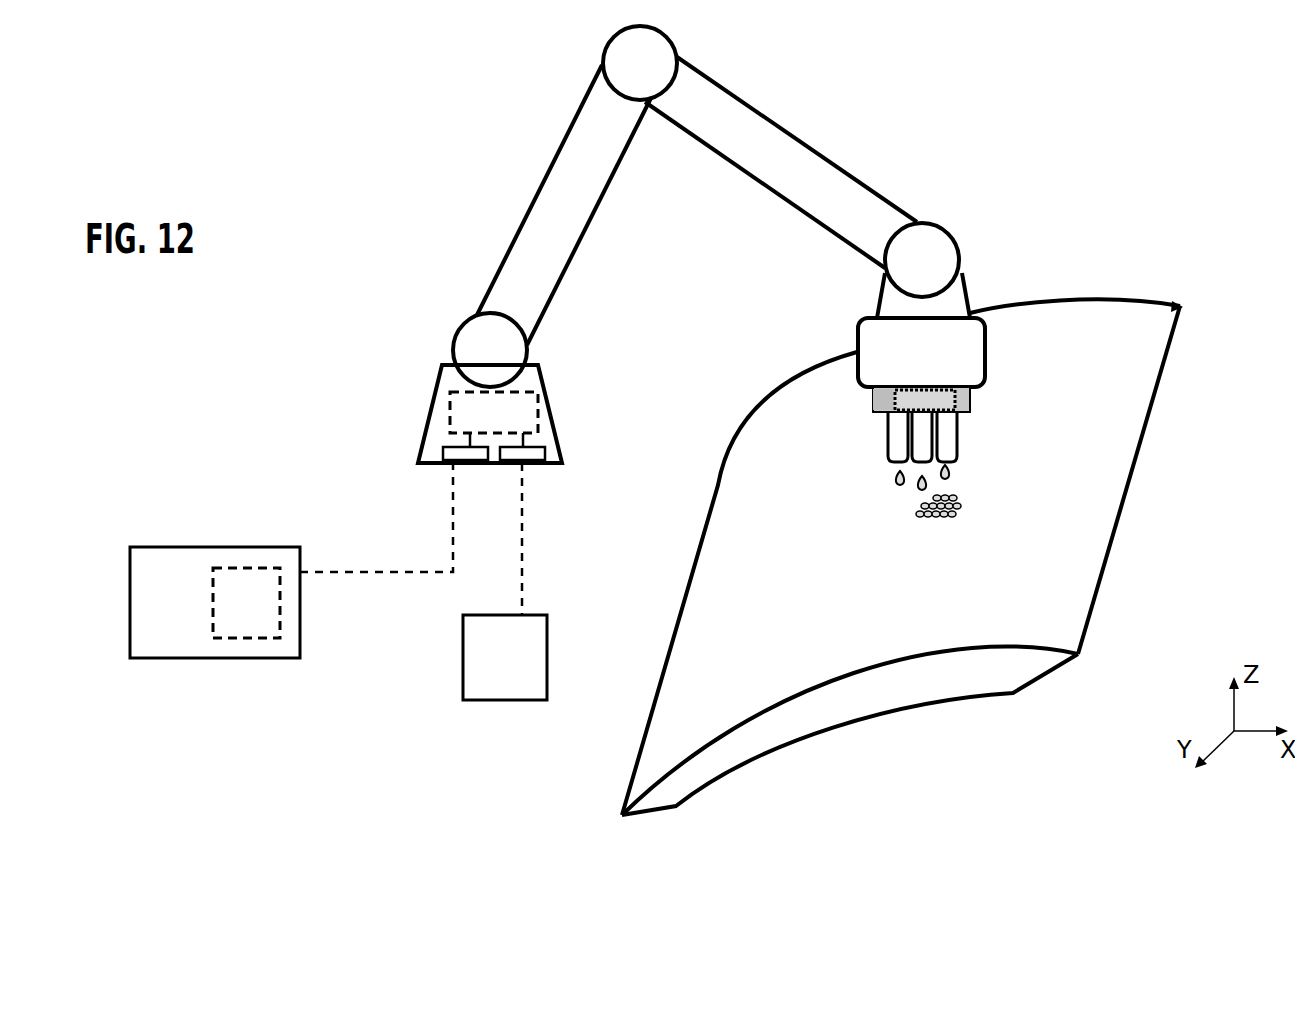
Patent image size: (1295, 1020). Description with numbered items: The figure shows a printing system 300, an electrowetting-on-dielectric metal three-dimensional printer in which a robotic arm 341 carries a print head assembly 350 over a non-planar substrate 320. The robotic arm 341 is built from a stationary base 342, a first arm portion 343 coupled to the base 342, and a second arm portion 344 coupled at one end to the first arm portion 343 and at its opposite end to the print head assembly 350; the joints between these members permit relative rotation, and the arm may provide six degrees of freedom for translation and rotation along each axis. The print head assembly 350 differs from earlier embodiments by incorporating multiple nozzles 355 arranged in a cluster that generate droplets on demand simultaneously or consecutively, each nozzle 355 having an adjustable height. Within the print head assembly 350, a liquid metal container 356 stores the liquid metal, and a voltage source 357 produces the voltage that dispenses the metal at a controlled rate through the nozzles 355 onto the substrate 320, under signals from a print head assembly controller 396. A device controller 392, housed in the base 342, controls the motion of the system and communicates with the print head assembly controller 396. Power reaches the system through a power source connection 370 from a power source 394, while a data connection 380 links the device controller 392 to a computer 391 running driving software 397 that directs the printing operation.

The printing system 300 is at (308, 180).
The substrate 320 is at (717, 628).
The robotic arm 341 is at (503, 227).
The base 342 is at (425, 417).
The first arm portion 343 is at (505, 260).
The second arm portion 344 is at (864, 190).
The print head assembly 350 is at (1008, 287).
The nozzle 355 is at (898, 438).
The liquid metal container 356 is at (862, 375).
The voltage source 357 is at (973, 397).
The power source connection 370 is at (545, 453).
The data connection 380 is at (428, 467).
The computer 391 is at (130, 605).
The device controller 392 is at (445, 408).
The power source 394 is at (522, 677).
The print head assembly controller 396 is at (872, 404).
The driving software 397 is at (262, 620).